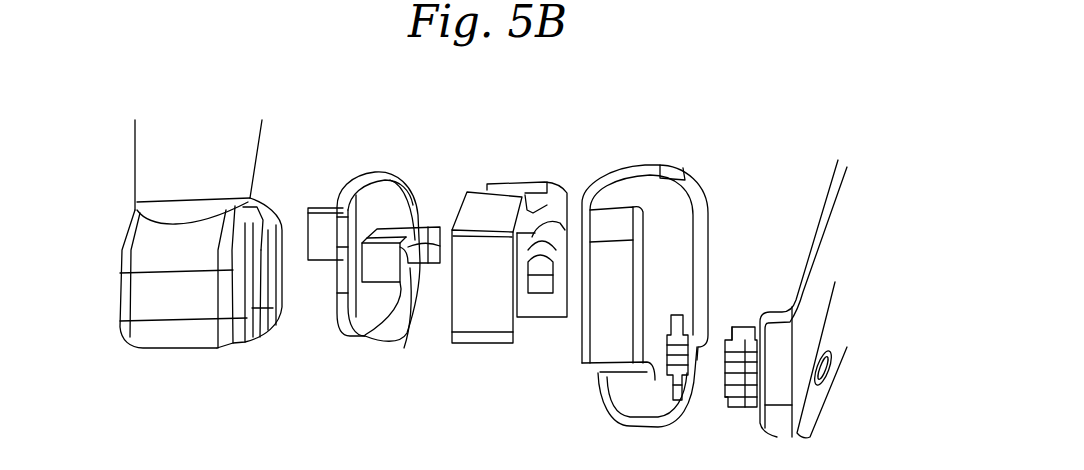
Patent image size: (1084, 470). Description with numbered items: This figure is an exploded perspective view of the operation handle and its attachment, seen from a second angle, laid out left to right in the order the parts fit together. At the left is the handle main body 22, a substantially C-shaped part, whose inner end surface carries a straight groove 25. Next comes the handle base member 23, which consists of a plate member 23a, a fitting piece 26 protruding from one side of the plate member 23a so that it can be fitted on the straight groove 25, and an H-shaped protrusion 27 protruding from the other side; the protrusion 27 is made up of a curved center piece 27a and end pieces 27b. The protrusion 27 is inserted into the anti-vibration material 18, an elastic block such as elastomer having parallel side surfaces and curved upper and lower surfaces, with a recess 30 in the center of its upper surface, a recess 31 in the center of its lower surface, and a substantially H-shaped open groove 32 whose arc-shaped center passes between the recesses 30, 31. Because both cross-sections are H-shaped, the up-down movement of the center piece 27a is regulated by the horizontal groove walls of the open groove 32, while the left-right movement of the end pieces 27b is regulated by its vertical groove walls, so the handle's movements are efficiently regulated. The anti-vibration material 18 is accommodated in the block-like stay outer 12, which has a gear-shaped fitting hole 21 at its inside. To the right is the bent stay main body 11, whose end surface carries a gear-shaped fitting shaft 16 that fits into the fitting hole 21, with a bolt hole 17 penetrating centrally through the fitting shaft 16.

The stay main body 11 is at (829, 299).
The stay outer 12 is at (668, 263).
The fitting shaft 16 is at (737, 326).
The bolt hole 17 is at (825, 373).
The anti-vibration material 18 is at (527, 261).
The fitting hole 21 is at (680, 320).
The handle main body 22 is at (158, 159).
The handle base member 23 is at (378, 156).
The plate member 23a is at (337, 325).
The straight groove 25 is at (253, 237).
The fitting piece 26 is at (313, 223).
The H-shaped protrusion 27 is at (416, 244).
The center piece 27a is at (410, 215).
The end pieces 27b is at (375, 268).
The recess 30 is at (529, 210).
The recess 31 is at (533, 303).
The open groove 32 is at (545, 232).